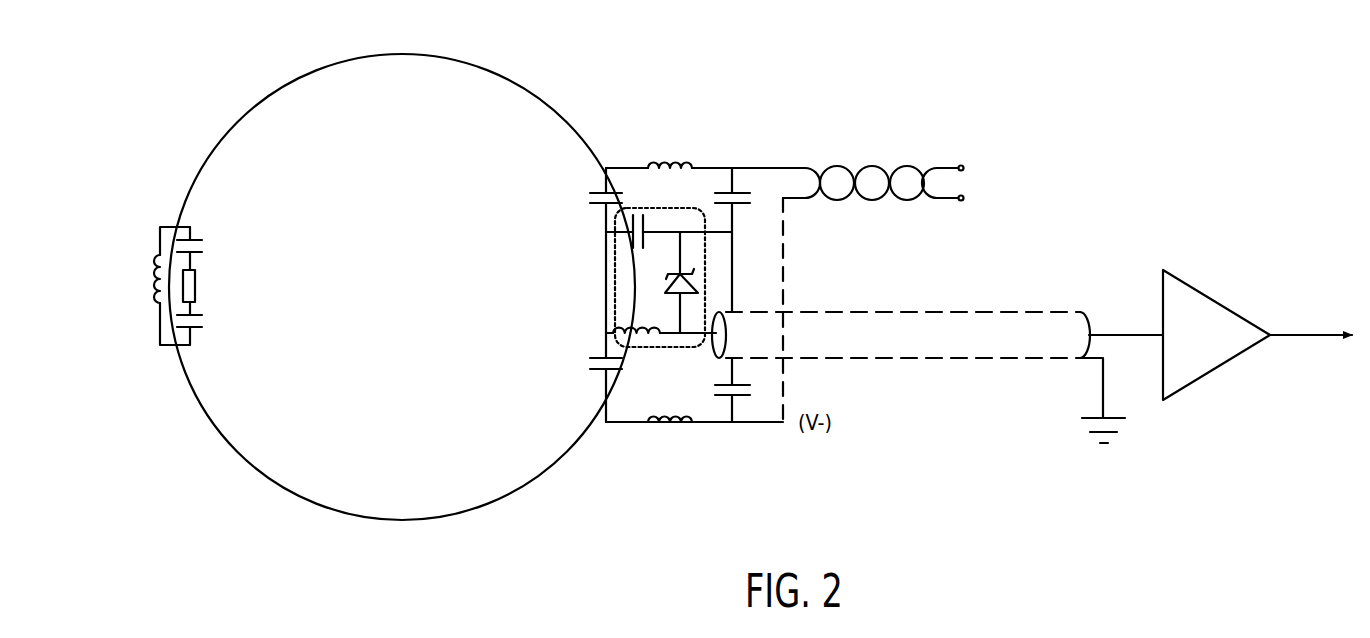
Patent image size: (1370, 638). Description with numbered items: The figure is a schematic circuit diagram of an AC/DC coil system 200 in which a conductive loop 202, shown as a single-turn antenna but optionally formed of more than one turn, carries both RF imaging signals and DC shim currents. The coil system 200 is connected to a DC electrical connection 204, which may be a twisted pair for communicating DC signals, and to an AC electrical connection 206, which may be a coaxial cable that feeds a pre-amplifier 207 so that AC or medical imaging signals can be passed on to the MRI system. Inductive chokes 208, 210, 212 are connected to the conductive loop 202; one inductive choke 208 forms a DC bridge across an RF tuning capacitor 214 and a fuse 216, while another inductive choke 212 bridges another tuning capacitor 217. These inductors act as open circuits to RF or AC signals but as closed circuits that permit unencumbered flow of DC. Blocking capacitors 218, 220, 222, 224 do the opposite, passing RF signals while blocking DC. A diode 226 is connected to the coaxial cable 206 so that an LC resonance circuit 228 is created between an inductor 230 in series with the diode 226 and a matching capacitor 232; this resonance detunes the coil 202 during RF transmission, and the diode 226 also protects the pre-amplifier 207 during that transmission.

The AC/DC coil system 200 is at (1312, 262).
The conductive loop 202 is at (395, 519).
The DC electrical connection 204 is at (972, 185).
The AC electrical connection 206 is at (900, 345).
The pre-amplifier 207 is at (1257, 335).
The inductive choke 208 is at (150, 292).
The inductive choke 210 is at (665, 152).
The inductive choke 212 is at (688, 410).
The RF tuning capacitor 214 is at (209, 329).
The fuse 216 is at (198, 278).
The tuning capacitor 217 is at (582, 376).
The blocking capacitor 218 is at (208, 240).
The blocking capacitor 220 is at (757, 396).
The blocking capacitor 222 is at (760, 193).
The blocking capacitor 224 is at (582, 213).
The diode 226 is at (667, 290).
The LC resonance circuit 228 is at (695, 212).
The inductor 230 is at (622, 322).
The matching capacitor 232 is at (630, 248).